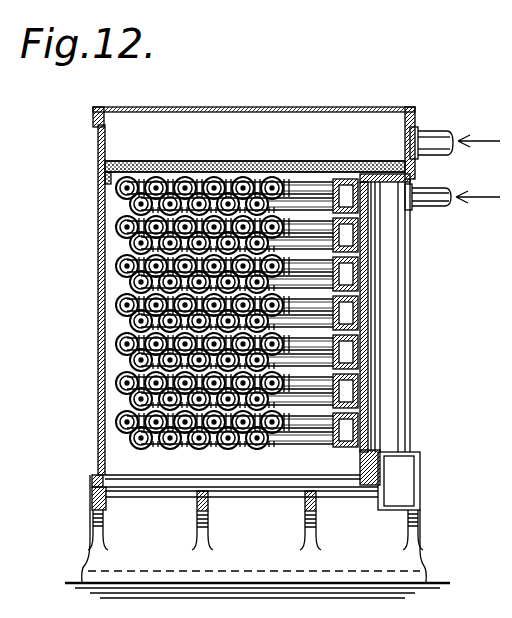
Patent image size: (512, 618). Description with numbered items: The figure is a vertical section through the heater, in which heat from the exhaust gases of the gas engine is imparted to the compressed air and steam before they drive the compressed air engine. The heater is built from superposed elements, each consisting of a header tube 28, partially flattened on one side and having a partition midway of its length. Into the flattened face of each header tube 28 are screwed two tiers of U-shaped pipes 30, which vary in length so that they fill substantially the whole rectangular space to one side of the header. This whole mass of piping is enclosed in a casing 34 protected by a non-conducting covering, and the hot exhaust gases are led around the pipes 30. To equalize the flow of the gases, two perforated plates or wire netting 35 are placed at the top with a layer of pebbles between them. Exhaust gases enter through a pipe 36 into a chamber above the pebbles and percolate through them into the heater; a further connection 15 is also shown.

The casing 34 is at (218, 108).
The perforated plates or wire netting 35 is at (208, 162).
The pipe 36 is at (421, 134).
The lower pipe connection 15 is at (432, 195).
The pipes 30 is at (120, 275).
The tube 28 is at (345, 447).